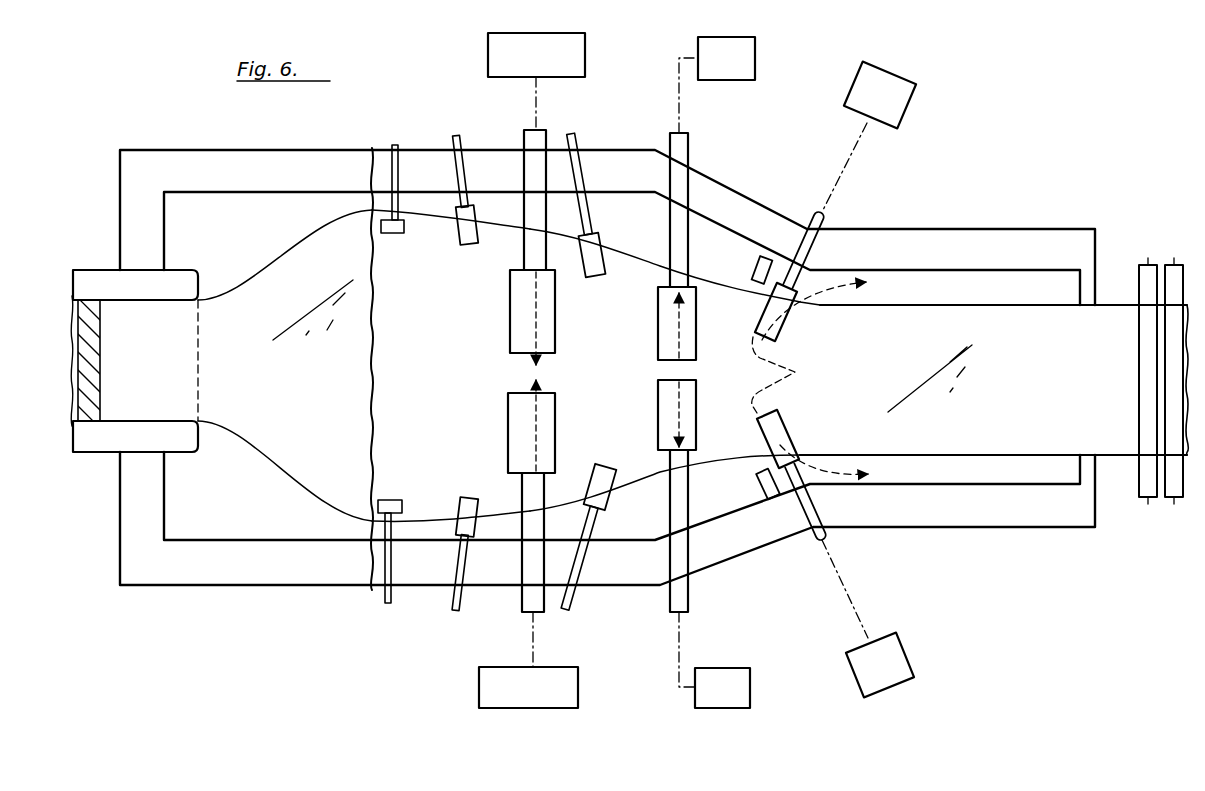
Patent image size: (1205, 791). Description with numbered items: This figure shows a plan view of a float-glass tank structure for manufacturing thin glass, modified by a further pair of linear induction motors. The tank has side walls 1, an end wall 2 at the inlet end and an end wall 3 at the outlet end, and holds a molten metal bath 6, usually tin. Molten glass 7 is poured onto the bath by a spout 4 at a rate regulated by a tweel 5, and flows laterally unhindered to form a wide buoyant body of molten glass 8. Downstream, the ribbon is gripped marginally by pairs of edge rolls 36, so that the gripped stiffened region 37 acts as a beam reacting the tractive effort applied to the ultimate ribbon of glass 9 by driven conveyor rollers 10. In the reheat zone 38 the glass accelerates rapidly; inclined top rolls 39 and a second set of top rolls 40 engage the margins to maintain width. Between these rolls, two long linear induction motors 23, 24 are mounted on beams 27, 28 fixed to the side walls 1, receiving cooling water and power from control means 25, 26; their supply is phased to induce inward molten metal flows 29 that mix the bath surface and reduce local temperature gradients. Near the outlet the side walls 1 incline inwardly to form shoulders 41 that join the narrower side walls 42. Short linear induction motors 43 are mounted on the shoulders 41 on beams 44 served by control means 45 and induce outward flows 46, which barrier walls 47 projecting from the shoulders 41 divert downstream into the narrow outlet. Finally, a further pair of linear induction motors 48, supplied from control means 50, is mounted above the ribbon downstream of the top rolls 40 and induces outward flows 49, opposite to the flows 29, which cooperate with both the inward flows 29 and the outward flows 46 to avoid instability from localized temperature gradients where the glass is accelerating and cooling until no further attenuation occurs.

The side walls 1 is at (276, 168).
The end wall 2 is at (135, 217).
The end wall 3 is at (1090, 508).
The spout 4 is at (93, 272).
The tweel 5 is at (91, 410).
The molten metal bath 6 is at (197, 203).
The molten glass 7 is at (236, 425).
The buoyant body of molten glass 8 is at (213, 370).
The ribbon of glass 9 is at (1098, 392).
The driven conveyor rollers 10 is at (1173, 272).
The linear induction motor 23 is at (517, 297).
The linear induction motor 24 is at (520, 453).
The control means 25 is at (492, 50).
The control means 26 is at (567, 688).
The beam 27 is at (528, 143).
The beam 28 is at (523, 602).
The molten metal flows 29 is at (538, 311).
The edge rolls 36 is at (394, 234).
The gripped stiffened region 37 is at (381, 390).
The reheat zone 38 is at (478, 390).
The inclined top rolls 39 is at (468, 236).
The top rolls 40 is at (598, 245).
The shoulders 41 is at (740, 207).
The side walls 42 is at (1032, 246).
The linear induction motors 43 is at (784, 321).
The beams 44 is at (830, 218).
The control means 45 is at (900, 101).
The molten metal flows 46 is at (798, 372).
The barrier wall 47 is at (759, 265).
The linear induction motors 48 is at (697, 383).
The outward flows 49 is at (678, 316).
The control means 50 is at (745, 58).